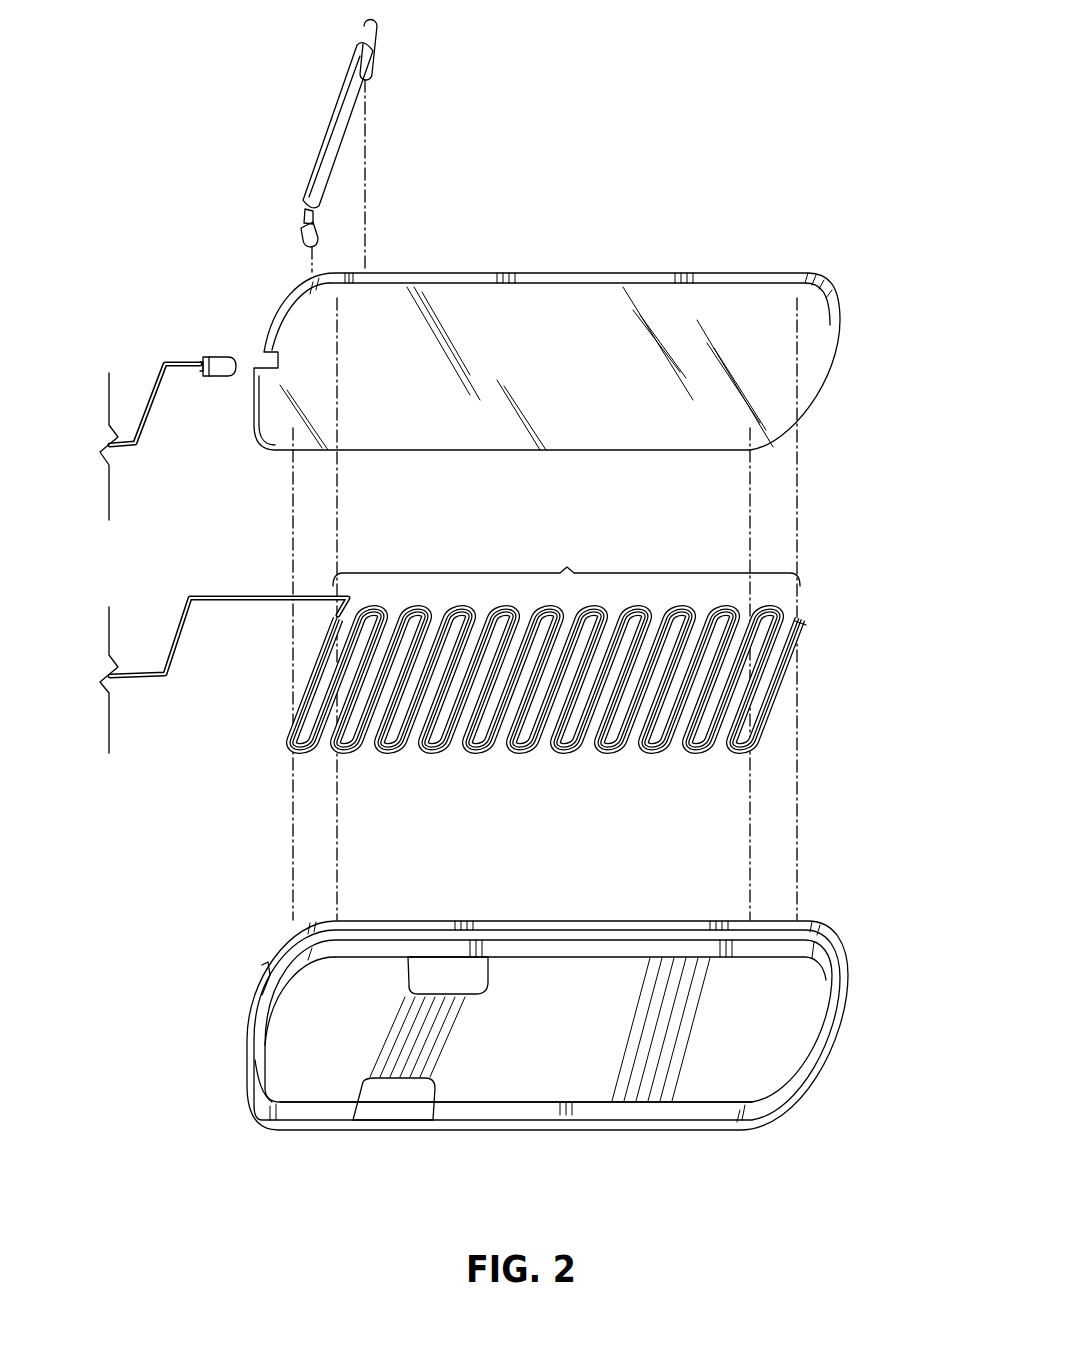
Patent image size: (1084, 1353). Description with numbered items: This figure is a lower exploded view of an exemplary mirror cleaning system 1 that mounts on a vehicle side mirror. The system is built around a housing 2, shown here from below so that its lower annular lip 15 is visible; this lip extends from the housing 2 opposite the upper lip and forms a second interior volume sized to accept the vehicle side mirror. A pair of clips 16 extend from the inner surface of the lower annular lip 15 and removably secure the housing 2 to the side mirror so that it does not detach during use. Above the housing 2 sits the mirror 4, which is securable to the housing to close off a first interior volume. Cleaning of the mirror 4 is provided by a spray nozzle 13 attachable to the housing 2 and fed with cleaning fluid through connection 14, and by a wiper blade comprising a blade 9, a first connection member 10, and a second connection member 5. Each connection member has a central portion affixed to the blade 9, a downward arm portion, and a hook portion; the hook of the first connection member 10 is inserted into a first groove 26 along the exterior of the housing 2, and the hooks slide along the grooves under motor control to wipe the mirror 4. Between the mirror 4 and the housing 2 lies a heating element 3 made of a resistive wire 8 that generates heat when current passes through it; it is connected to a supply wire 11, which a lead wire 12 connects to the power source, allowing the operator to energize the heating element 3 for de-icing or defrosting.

The mirror cleaning system 1 is at (693, 106).
The housing 2 is at (845, 1040).
The heating element 3 is at (799, 624).
The mirror 4 is at (843, 372).
The second connection member 5 is at (301, 226).
The resistive wire 8 is at (566, 560).
The blade 9 is at (324, 128).
The first connection member 10 is at (378, 34).
The supply wire 11 is at (177, 652).
The lead wire 12 is at (130, 680).
The spray nozzle 13 is at (222, 357).
The connection 14 is at (130, 448).
The lower annular lip 15 is at (600, 1115).
The pair of clips 16 is at (410, 990).
The first groove 26 is at (832, 935).